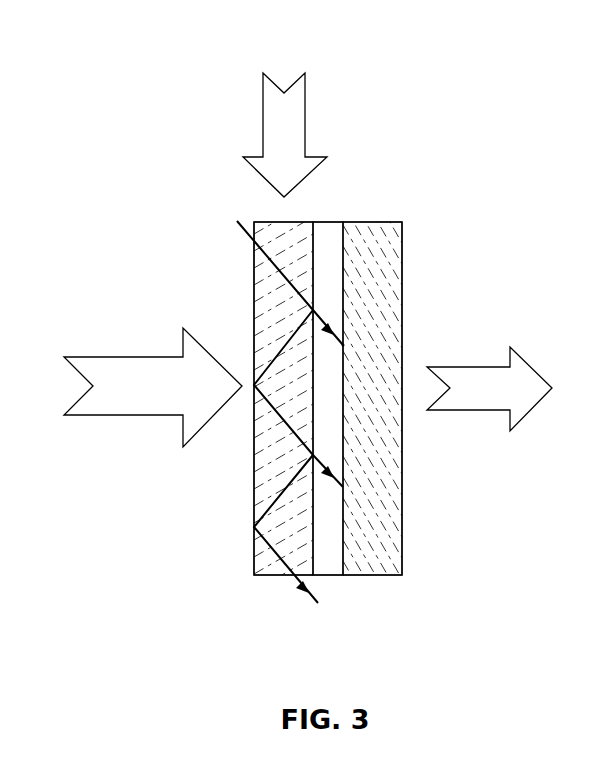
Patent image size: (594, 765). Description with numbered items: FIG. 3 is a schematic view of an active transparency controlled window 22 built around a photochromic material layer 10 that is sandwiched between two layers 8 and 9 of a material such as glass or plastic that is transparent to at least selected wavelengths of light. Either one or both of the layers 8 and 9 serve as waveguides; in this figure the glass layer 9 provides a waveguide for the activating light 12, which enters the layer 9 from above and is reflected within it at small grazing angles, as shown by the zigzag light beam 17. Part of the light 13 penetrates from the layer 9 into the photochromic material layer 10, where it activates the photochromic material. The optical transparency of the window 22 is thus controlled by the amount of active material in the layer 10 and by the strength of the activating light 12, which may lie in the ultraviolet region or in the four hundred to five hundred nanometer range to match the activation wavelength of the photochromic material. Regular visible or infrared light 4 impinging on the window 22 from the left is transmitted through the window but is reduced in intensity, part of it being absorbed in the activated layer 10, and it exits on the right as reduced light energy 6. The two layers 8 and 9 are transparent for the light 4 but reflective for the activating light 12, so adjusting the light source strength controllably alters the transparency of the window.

The active transparency controlled window 22 is at (470, 145).
The activating light 12 is at (305, 100).
The impinging light 4 is at (110, 357).
The reduced light energy 6 is at (452, 367).
The part of the light 13 is at (343, 345).
The glass layer 9 is at (275, 577).
The photochromic material layer 10 is at (328, 577).
The layer 8 is at (378, 577).
The light beam 17 is at (295, 582).